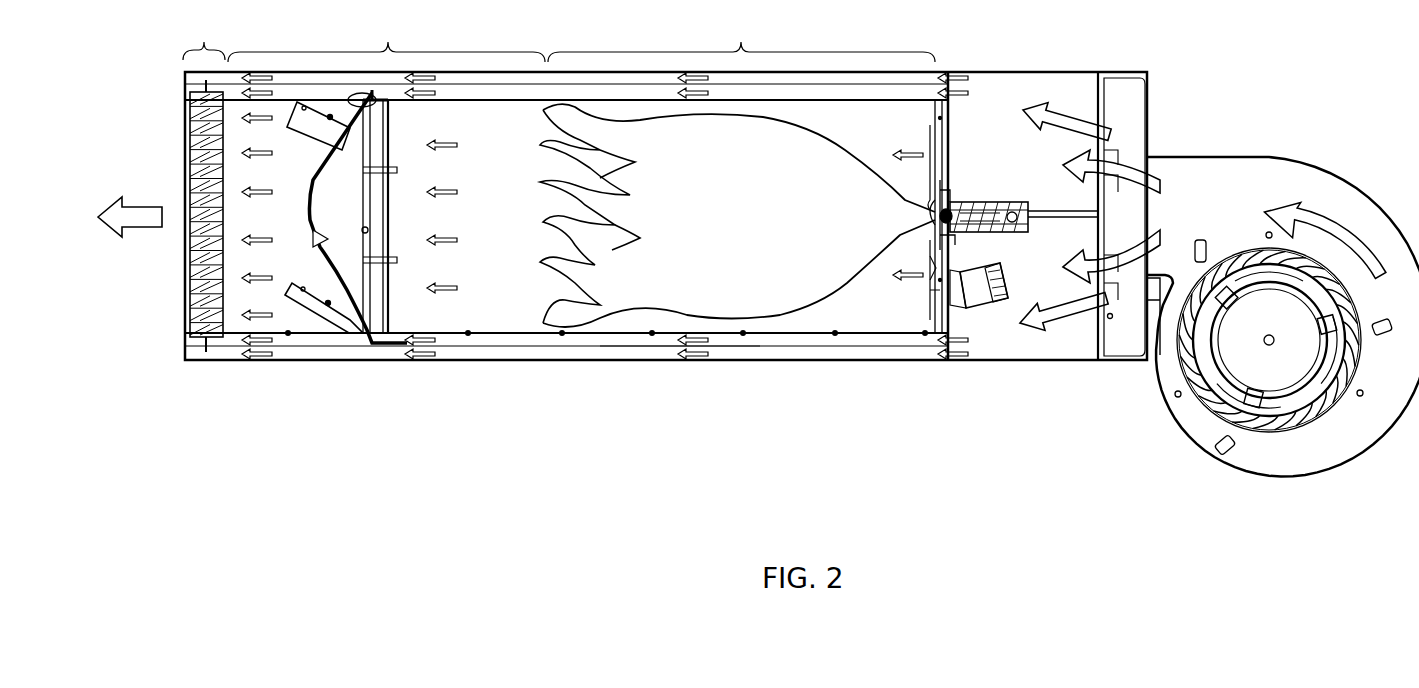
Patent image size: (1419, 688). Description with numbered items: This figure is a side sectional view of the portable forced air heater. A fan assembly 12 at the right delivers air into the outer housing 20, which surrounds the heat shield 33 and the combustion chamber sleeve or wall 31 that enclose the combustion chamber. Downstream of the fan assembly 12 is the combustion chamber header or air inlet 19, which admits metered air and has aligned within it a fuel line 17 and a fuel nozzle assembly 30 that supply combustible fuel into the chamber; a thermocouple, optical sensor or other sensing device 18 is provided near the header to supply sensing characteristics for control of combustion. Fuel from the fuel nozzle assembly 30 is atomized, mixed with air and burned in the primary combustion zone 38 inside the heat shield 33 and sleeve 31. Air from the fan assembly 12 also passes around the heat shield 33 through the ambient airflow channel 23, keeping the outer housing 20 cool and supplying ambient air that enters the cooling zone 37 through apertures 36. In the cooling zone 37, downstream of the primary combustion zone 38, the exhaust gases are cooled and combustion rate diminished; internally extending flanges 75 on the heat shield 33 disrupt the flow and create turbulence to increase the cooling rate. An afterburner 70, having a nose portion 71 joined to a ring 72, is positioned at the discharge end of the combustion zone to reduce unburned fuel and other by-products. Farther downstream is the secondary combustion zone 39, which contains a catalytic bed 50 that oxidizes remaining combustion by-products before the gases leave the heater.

The fan assembly 12 is at (1350, 160).
The fuel line 17 is at (1055, 210).
The sensing device 18 is at (1012, 296).
The combustion chamber header 19 is at (970, 128).
The outer housing 20 is at (864, 358).
The ambient airflow channel 23 is at (455, 347).
The fuel nozzle assembly 30 is at (935, 216).
The combustion chamber sleeve 31 is at (766, 347).
The heat shield 33 is at (608, 347).
The apertures 36 is at (376, 110).
The cooling zone 37 is at (386, 37).
The primary combustion zone 38 is at (741, 37).
The secondary combustion zone 39 is at (204, 36).
The catalytic bed 50 is at (190, 115).
The afterburner 70 is at (330, 178).
The nose portion 71 is at (310, 226).
The ring 72 is at (378, 280).
The flanges 75 is at (318, 305).